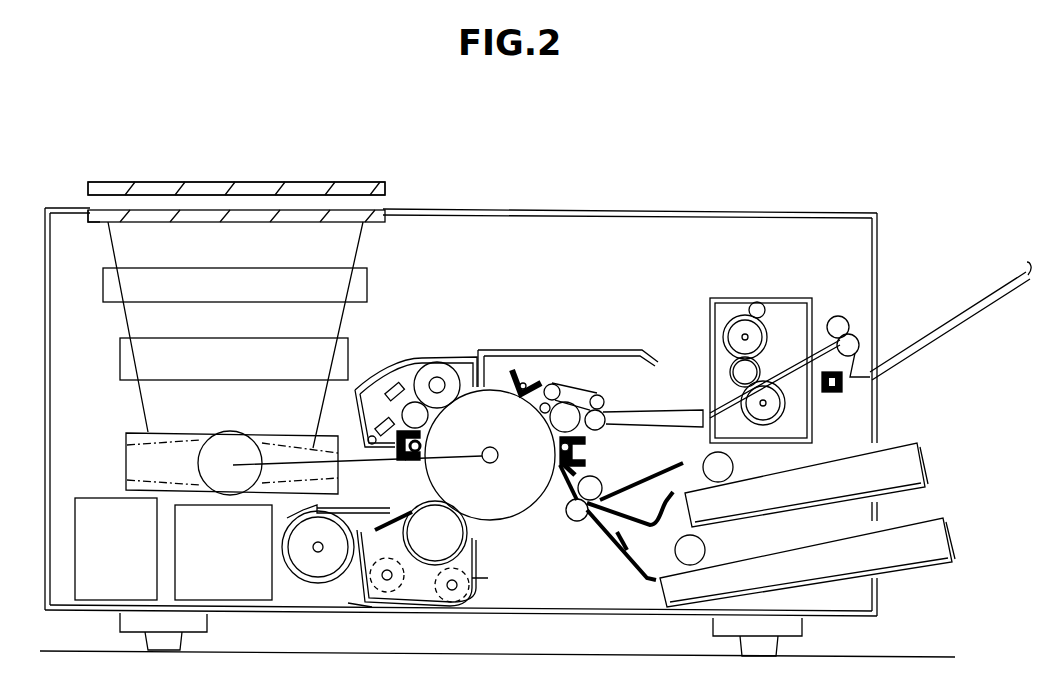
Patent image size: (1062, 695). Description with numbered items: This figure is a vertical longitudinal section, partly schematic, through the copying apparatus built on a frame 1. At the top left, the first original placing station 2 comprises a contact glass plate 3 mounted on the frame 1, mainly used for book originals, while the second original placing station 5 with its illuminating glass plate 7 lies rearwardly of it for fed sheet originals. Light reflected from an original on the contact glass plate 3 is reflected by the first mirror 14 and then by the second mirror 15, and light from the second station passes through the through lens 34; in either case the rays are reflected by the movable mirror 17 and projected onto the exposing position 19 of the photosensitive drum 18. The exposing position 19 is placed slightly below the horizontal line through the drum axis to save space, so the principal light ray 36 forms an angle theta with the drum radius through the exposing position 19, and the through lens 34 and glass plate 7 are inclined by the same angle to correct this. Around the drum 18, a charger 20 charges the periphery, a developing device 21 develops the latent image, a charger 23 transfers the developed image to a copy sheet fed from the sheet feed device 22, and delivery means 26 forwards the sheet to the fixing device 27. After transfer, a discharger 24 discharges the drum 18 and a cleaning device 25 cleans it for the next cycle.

The frame 1 is at (722, 213).
The first original placing station 2 is at (384, 204).
The contact glass plate 3 is at (98, 213).
The second original placing station 5 is at (373, 182).
The illuminating glass plate 7 is at (175, 182).
The first mirror 14 is at (367, 285).
The second mirror 15 is at (348, 358).
The movable mirror 17 is at (126, 437).
The photosensitive drum 18 is at (525, 493).
The exposing position 19 is at (455, 468).
The charger 20 is at (395, 460).
The developing device 21 is at (470, 538).
The sheet feed device 22 is at (925, 463).
The charger 23 is at (593, 450).
The discharger 24 is at (510, 367).
The cleaning device 25 is at (440, 365).
The delivery means 26 is at (577, 390).
The fixing device 27 is at (708, 338).
The through lens 34 is at (232, 495).
The principal light ray 36 is at (348, 462).